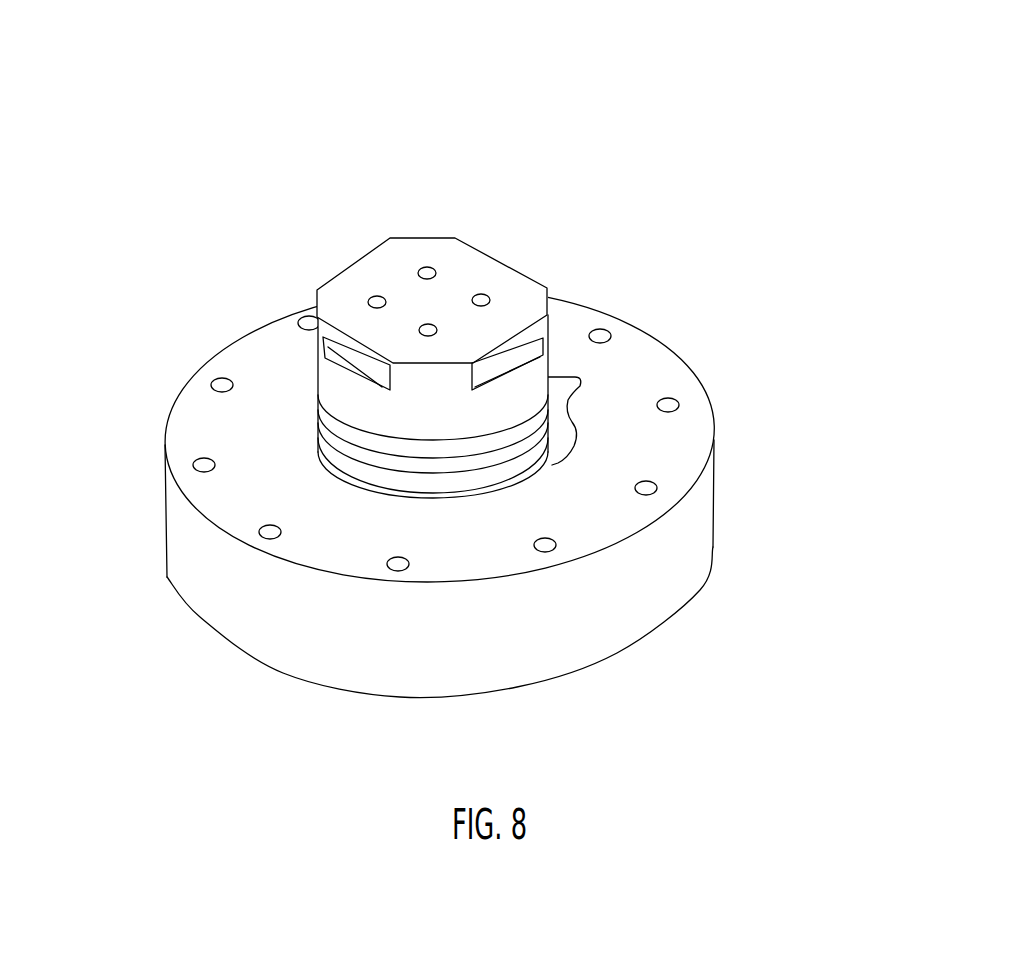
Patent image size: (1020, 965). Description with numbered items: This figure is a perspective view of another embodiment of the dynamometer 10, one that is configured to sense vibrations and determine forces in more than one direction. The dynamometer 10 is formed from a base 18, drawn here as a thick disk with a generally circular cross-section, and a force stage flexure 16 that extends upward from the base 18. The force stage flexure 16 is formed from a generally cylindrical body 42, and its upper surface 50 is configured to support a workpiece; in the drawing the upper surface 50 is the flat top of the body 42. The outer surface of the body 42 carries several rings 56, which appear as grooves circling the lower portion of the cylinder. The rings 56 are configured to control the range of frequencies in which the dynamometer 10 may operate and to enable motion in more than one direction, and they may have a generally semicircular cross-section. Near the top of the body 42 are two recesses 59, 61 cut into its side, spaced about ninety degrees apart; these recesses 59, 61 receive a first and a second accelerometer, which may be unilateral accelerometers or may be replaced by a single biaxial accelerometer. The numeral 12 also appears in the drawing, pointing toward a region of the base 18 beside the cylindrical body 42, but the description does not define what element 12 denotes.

The dynamometer 10 is at (462, 360).
The base plate 12 is at (603, 400).
The force stage flexure 16 is at (578, 433).
The base 18 is at (717, 532).
The body 42 is at (548, 362).
The upper surface 50 is at (492, 265).
The rings 56 is at (345, 462).
The recess 59 is at (350, 342).
The recess 61 is at (508, 333).